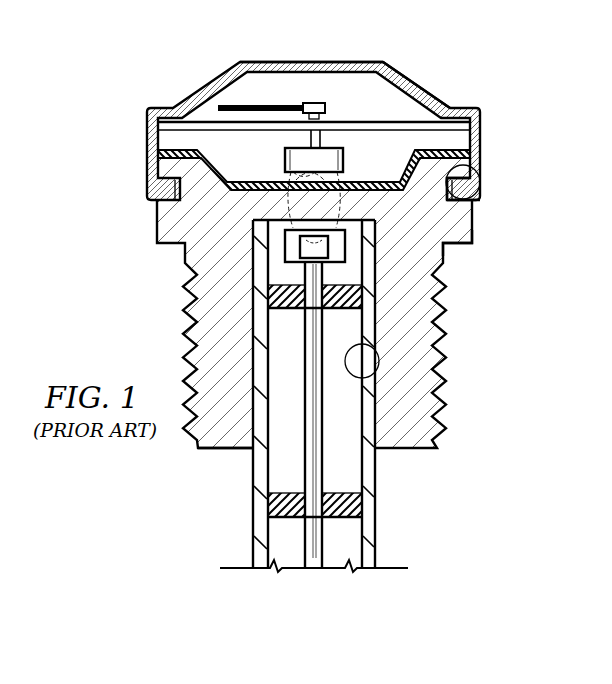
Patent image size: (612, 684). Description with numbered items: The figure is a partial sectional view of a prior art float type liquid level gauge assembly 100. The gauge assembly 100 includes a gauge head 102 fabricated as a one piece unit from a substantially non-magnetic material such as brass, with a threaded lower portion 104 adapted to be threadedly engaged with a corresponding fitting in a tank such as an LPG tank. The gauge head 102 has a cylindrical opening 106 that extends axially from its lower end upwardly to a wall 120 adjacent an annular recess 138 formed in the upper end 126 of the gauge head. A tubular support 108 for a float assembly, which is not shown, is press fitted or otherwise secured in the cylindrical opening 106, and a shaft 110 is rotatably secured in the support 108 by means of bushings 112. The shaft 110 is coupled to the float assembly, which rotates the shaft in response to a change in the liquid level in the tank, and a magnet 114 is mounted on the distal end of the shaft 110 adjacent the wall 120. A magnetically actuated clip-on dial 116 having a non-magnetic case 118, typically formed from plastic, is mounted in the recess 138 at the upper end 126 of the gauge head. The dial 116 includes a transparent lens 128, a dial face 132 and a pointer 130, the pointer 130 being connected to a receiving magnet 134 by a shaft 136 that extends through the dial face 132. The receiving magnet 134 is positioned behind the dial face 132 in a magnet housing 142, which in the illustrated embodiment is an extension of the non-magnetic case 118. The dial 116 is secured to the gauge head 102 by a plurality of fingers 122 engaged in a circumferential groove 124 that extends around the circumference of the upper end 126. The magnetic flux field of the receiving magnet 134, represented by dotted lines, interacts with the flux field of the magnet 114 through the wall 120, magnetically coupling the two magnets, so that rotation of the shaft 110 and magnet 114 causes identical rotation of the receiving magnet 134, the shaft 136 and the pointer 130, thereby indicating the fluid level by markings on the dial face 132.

The gauge assembly 100 is at (70, 146).
The gauge head 102 is at (213, 449).
The threaded lower portion 104 is at (314, 329).
The cylindrical opening 106 is at (372, 345).
The tubular support 108 is at (376, 527).
The shaft 110 is at (324, 549).
The bushings 112 is at (290, 310).
The magnet 114 is at (298, 260).
The clip-on dial 116 is at (196, 76).
The non-magnetic case 118 is at (486, 132).
The wall 120 is at (263, 200).
The fingers 122 is at (482, 171).
The circumferential groove 124 is at (481, 195).
The upper end 126 is at (473, 240).
The transparent lens 128 is at (378, 62).
The pointer 130 is at (242, 105).
The dial face 132 is at (428, 117).
The receiving magnet 134 is at (342, 128).
The shaft 136 is at (313, 101).
The annular recess 138 is at (400, 166).
The magnet housing 142 is at (226, 160).